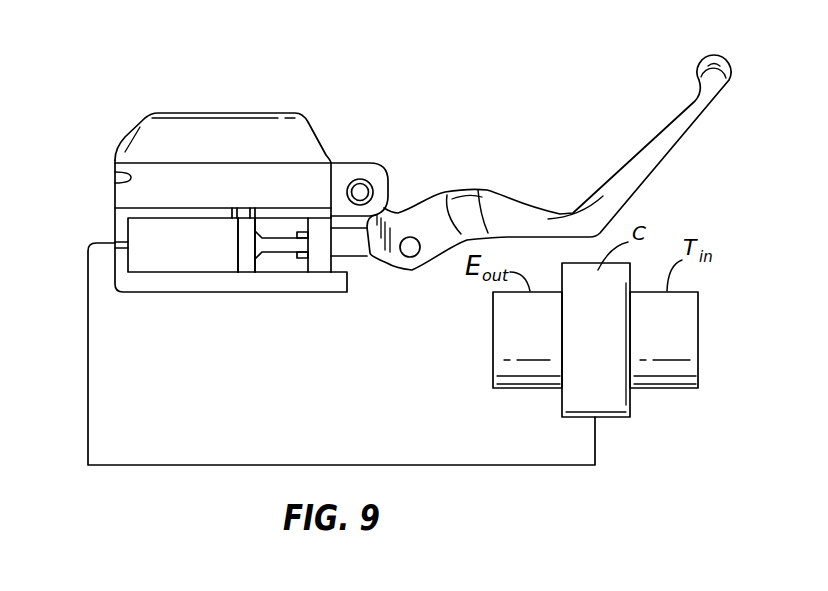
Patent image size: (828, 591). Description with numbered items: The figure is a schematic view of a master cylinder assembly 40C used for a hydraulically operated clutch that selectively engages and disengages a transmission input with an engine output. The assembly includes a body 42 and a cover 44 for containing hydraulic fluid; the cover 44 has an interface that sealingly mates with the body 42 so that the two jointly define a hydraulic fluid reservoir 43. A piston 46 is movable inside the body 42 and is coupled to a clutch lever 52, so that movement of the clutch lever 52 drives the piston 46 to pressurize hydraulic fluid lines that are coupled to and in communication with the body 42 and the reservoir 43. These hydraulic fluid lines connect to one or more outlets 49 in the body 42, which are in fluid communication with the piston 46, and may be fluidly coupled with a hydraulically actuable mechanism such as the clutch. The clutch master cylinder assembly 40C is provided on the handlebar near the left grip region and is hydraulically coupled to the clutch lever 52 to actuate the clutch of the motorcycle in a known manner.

The clutch master cylinder assembly 40C is at (102, 76).
The body 42 is at (115, 190).
The hydraulic fluid reservoir 43 is at (115, 183).
The cover 44 is at (240, 113).
The piston 46 is at (247, 260).
The outlets 49 is at (113, 241).
The clutch lever 52 is at (630, 175).